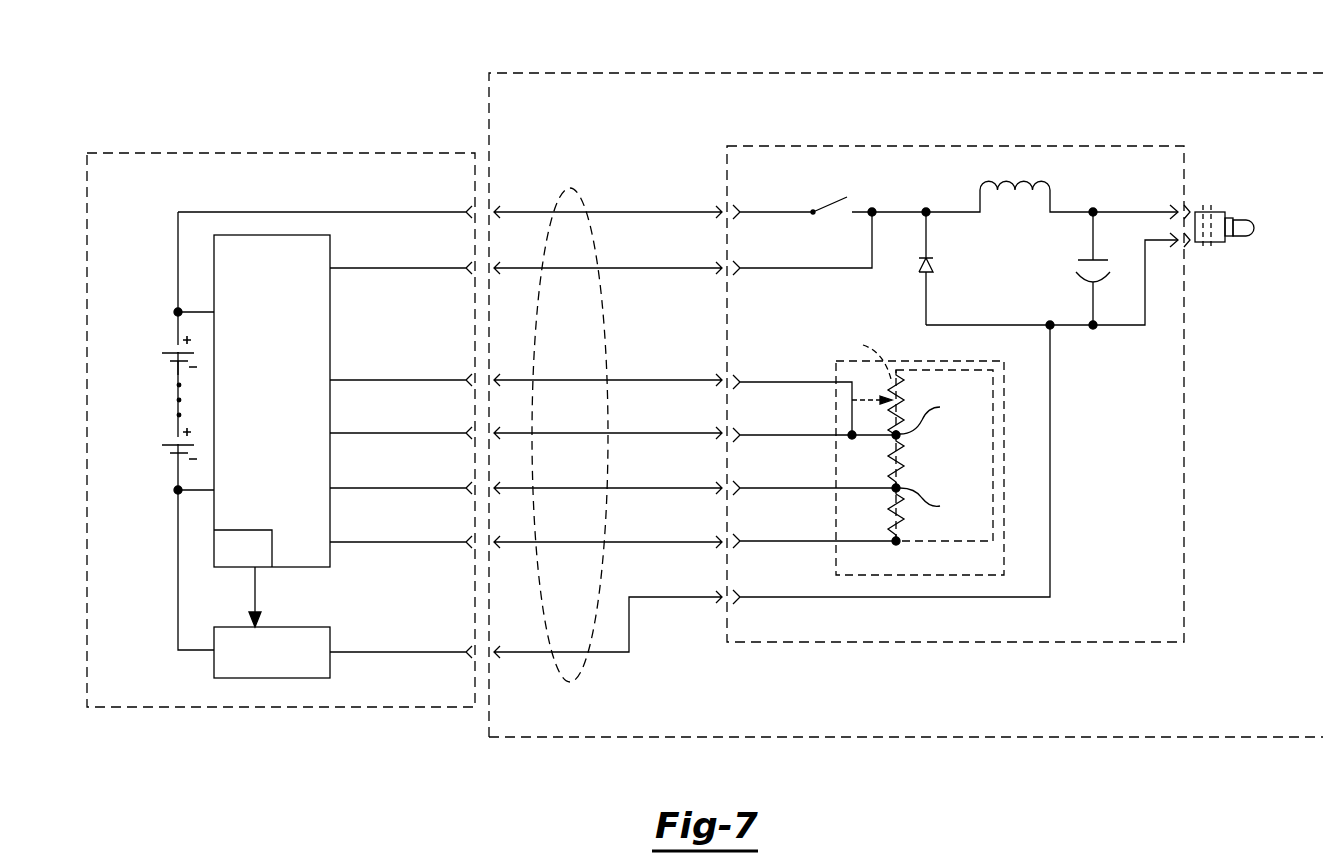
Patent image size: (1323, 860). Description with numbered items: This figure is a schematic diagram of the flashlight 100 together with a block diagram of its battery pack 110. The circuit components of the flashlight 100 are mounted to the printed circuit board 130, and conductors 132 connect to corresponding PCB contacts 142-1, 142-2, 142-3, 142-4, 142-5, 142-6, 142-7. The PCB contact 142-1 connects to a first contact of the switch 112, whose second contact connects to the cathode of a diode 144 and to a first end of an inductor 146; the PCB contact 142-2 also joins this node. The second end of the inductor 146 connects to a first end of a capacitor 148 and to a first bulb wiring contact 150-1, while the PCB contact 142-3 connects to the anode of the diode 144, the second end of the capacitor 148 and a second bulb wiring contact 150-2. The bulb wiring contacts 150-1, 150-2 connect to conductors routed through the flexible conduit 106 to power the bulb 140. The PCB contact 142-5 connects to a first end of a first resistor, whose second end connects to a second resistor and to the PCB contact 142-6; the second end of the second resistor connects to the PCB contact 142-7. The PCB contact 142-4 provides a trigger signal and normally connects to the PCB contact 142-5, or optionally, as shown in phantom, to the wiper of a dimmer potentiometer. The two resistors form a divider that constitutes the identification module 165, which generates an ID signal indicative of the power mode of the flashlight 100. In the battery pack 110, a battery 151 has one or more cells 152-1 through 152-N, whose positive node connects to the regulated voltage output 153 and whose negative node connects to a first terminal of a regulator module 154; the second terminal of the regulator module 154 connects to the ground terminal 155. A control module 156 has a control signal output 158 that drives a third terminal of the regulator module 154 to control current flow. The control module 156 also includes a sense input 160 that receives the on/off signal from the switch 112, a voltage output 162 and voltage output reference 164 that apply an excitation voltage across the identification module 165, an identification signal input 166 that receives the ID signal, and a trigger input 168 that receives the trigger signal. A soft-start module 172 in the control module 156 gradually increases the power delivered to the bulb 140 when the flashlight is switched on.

The flashlight 100 is at (541, 72).
The battery pack 110 is at (147, 153).
The printed circuit board 130 is at (1138, 146).
The flexible conduit 106 is at (1211, 198).
The bulb 140 is at (1262, 228).
The switch 112 is at (836, 200).
The inductor 146 is at (980, 188).
The capacitor 148 is at (1078, 262).
The diode 144 is at (934, 266).
The first bulb wiring contact 150-1 is at (1176, 208).
The second bulb wiring contact 150-2 is at (1180, 246).
The conductors 132 is at (572, 680).
The PCB contact 142-1 is at (738, 207).
The PCB contact 142-2 is at (738, 263).
The PCB contact 142-3 is at (738, 592).
The PCB contact 142-4 is at (738, 377).
The PCB contact 142-5 is at (738, 430).
The PCB contact 142-6 is at (738, 483).
The PCB contact 142-7 is at (738, 536).
The battery 151 is at (150, 285).
The cell 152-1 is at (165, 352).
The cell 152-N is at (165, 444).
The regulated voltage output 153 is at (420, 212).
The sense input 160 is at (420, 268).
The control module 156 is at (330, 325).
The trigger input 168 is at (420, 380).
The voltage output 162 is at (420, 433).
The identification signal input 166 is at (420, 488).
The voltage output reference 164 is at (420, 542).
The soft-start module 172 is at (272, 546).
The control signal output 158 is at (255, 595).
The ground terminal 155 is at (376, 652).
The regulator module 154 is at (214, 662).
The identification module 165 is at (894, 362).